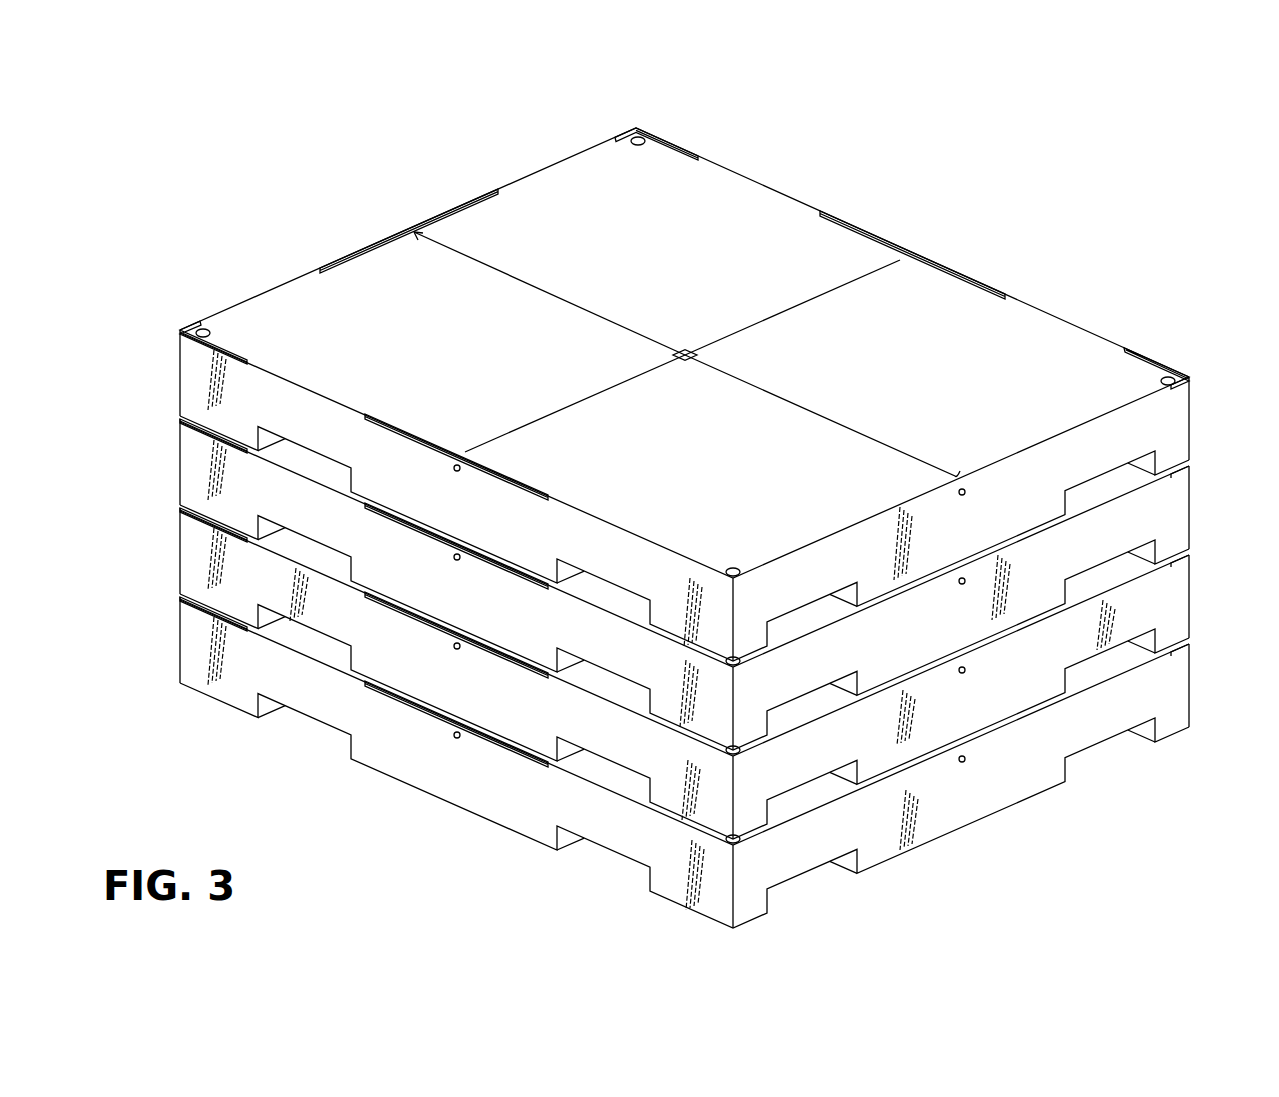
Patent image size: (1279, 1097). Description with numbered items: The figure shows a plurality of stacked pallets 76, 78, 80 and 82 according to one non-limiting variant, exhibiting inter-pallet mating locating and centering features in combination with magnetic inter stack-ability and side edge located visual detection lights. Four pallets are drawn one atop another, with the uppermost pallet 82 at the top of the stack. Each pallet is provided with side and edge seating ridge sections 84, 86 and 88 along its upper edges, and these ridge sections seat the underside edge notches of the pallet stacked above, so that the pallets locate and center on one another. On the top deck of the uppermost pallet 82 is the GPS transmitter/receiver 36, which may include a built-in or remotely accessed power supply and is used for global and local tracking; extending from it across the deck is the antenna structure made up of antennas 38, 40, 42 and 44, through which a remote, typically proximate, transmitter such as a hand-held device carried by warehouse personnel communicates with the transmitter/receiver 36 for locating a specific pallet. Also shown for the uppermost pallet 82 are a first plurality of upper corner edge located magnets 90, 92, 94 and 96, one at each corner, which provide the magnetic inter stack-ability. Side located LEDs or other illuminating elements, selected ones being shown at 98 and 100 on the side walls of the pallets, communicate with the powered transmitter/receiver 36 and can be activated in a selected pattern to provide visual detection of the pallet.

The GPS transmitter/receiver 36 is at (686, 346).
The antenna 38 is at (797, 307).
The antenna 40 is at (780, 399).
The antenna 42 is at (574, 407).
The antenna 44 is at (530, 286).
The pallet 76 is at (170, 639).
The pallet 78 is at (170, 547).
The pallet 80 is at (170, 447).
The uppermost pallet 82 is at (170, 366).
The seating ridge section 84 is at (1166, 375).
The seating ridge section 86 is at (899, 243).
The seating ridge section 88 is at (670, 144).
The upper corner edge located magnet 90 is at (1190, 371).
The upper corner edge located magnet 92 is at (638, 148).
The upper corner edge located magnet 94 is at (203, 329).
The upper corner edge located magnet 96 is at (733, 567).
The side located LED 98 is at (455, 473).
The side located LED 100 is at (968, 496).